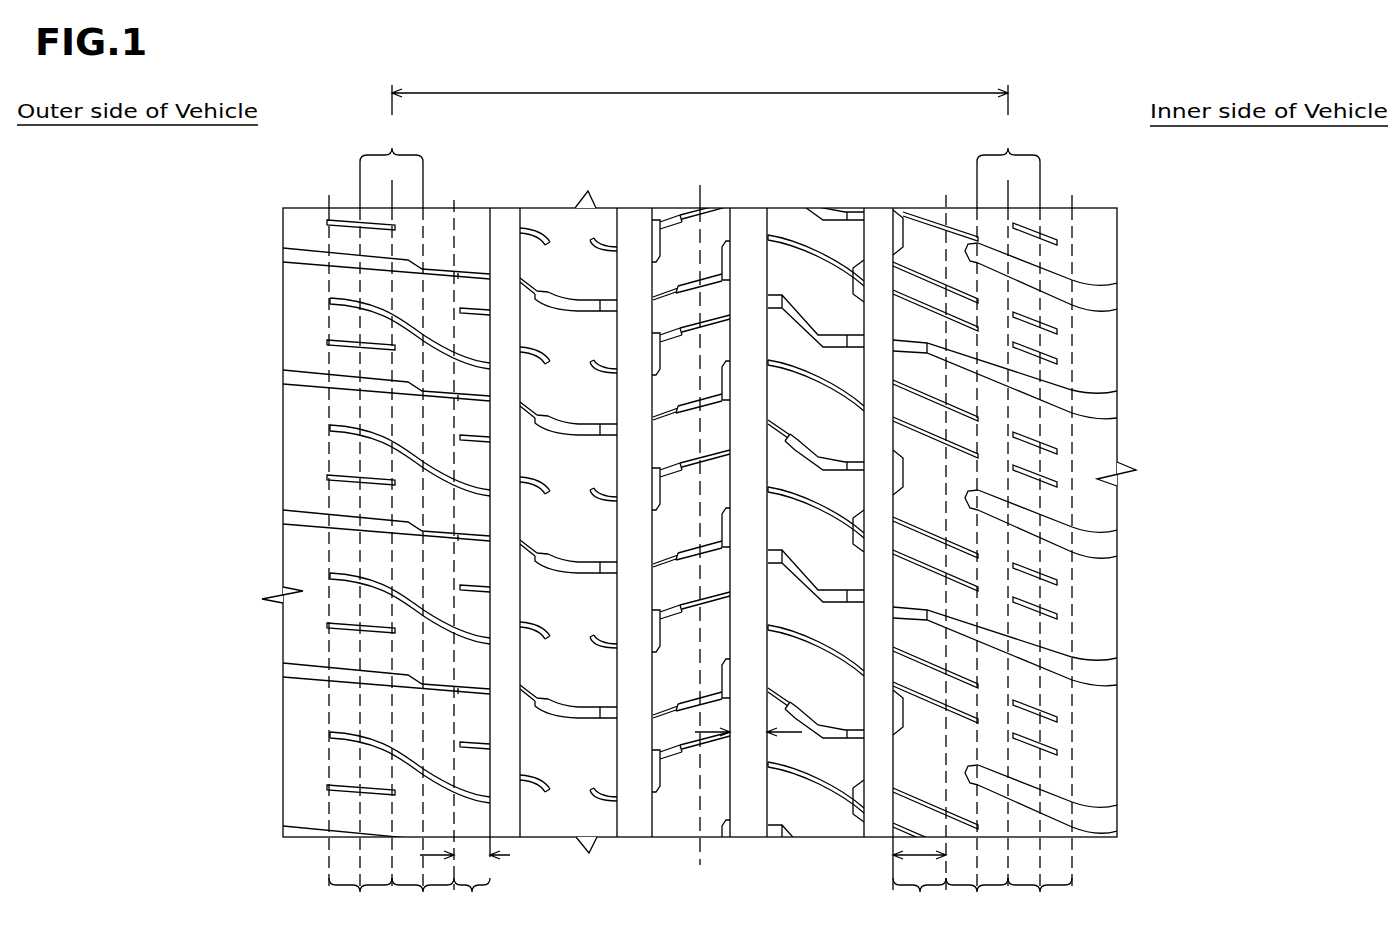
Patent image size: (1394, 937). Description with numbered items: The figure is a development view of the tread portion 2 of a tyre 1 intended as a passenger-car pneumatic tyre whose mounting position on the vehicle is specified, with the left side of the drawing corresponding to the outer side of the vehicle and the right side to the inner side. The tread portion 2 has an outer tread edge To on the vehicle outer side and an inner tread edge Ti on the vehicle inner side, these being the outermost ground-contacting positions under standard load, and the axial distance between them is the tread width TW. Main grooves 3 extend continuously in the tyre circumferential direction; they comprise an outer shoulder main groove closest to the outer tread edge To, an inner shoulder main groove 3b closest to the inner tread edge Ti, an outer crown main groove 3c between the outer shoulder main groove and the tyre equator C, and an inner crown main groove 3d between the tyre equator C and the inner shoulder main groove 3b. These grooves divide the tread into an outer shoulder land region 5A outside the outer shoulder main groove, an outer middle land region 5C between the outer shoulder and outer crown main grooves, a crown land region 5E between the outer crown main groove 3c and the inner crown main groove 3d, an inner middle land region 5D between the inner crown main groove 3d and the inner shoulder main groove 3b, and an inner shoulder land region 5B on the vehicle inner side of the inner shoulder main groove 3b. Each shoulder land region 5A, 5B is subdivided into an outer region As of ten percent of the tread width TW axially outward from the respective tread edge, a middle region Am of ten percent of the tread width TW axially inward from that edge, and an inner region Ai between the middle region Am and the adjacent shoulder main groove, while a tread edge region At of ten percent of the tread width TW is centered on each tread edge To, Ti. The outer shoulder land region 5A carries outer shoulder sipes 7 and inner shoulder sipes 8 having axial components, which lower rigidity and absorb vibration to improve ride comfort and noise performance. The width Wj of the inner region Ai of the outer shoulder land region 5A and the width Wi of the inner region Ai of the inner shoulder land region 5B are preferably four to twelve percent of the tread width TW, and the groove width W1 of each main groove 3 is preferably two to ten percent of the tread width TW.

The tyre 1 is at (1082, 125).
The tread portion 2 is at (920, 160).
The main grooves 3 is at (510, 228).
The inner shoulder main groove 3b is at (883, 230).
The outer crown main groove 3c is at (638, 235).
The inner crown main groove 3d is at (759, 232).
The outer shoulder land region 5A is at (446, 228).
The inner shoulder land region 5B is at (928, 243).
The outer middle land region 5C is at (574, 235).
The inner middle land region 5D is at (829, 233).
The crown land region 5E is at (719, 225).
The outer shoulder sipes 7 is at (343, 629).
The inner shoulder sipes 8 is at (1053, 619).
The outer tread edge To is at (392, 195).
The inner tread edge Ti is at (1008, 192).
The tread width TW is at (700, 87).
The tyre equator C is at (699, 509).
The tread edge region At is at (700, 162).
The outer region As is at (700, 565).
The middle region Am is at (700, 558).
The inner region Ai is at (700, 900).
The width of inner region of outer shoulder land region Wj is at (476, 857).
The width of inner region of inner shoulder land region Wi is at (910, 862).
The groove width of main groove W1 is at (749, 737).